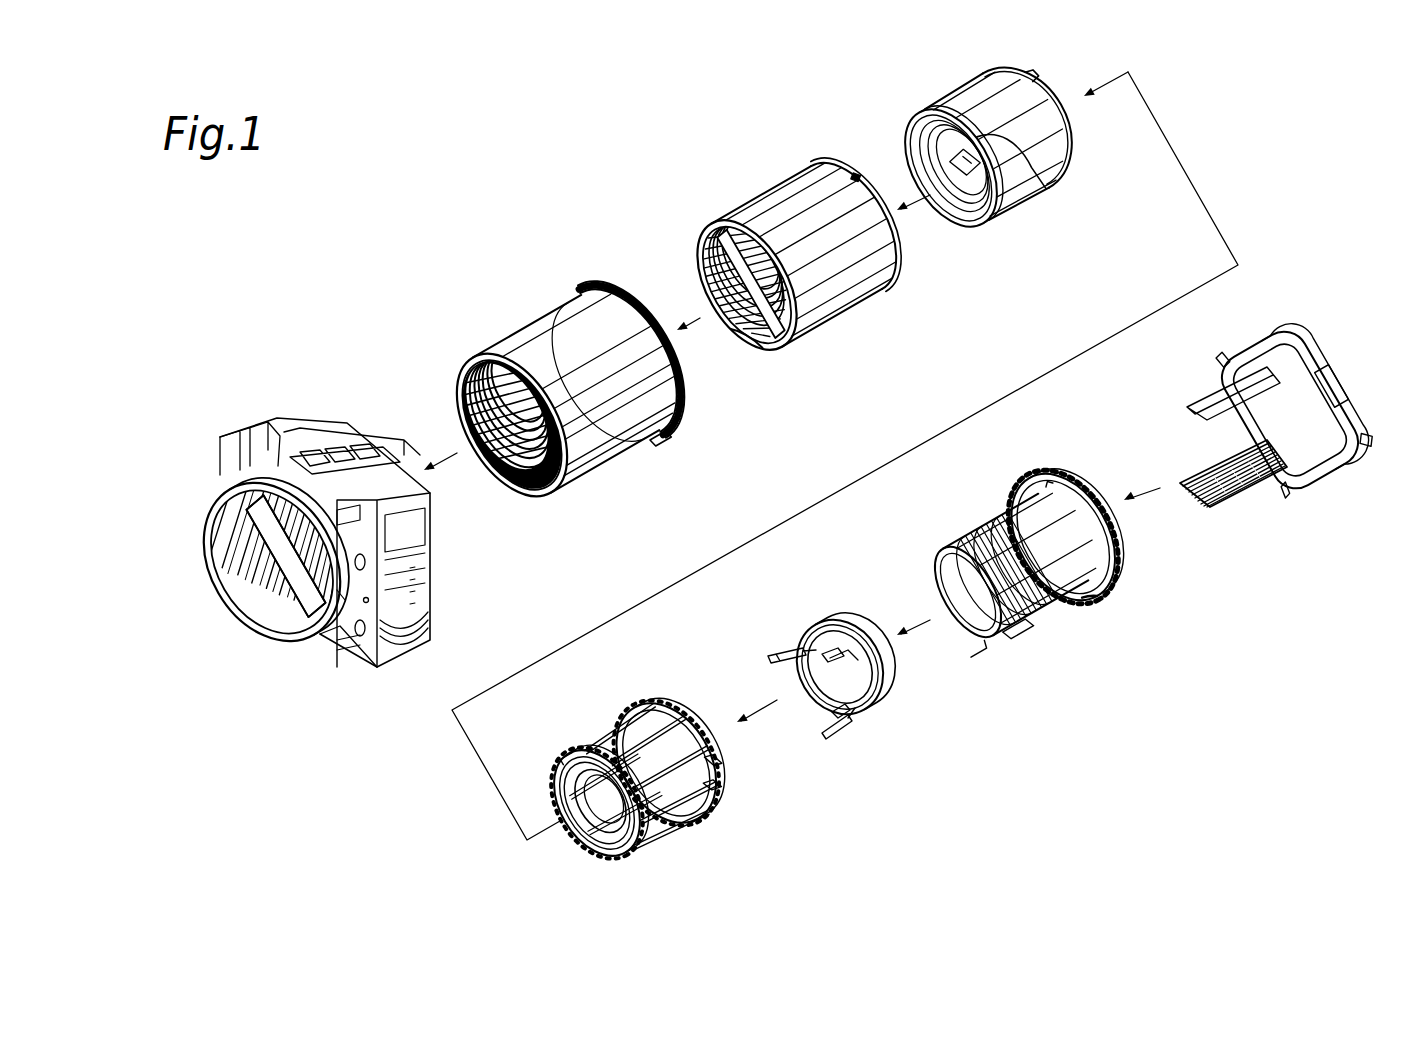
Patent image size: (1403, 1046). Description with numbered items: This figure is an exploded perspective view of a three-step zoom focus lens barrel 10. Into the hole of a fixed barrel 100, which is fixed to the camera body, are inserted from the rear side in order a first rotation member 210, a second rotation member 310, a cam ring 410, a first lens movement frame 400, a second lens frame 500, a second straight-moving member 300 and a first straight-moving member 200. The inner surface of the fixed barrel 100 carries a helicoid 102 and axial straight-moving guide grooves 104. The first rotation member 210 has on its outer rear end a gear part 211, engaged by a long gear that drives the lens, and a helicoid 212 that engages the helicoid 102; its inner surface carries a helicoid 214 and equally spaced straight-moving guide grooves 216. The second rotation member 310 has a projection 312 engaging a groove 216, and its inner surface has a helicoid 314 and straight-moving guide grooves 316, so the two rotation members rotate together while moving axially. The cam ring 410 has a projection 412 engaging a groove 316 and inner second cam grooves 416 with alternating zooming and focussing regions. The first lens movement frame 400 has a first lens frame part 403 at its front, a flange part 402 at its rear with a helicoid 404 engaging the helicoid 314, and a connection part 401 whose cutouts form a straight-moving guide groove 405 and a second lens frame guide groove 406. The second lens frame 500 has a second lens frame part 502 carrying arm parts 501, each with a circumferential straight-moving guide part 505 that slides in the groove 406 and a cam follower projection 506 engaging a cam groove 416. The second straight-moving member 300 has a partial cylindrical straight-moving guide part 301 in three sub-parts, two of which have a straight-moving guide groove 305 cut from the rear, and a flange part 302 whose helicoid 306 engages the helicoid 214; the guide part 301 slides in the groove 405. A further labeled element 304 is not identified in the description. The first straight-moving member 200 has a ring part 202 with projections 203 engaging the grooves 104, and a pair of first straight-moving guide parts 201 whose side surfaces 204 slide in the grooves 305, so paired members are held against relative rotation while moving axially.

The lens barrel 10 is at (384, 205).
The fixed barrel 100 is at (294, 554).
The helicoid 102 is at (282, 626).
The straight-moving guide grooves 104 is at (333, 642).
The first straight-moving member 200 is at (1255, 386).
The first straight-moving guide parts 201 is at (1200, 462).
The ring part 202 is at (1318, 481).
The projections 203 is at (1258, 341).
The side surface 204 is at (1240, 491).
The first rotation member 210 is at (537, 404).
The gear part 211 is at (594, 284).
The helicoid 212 is at (672, 434).
The helicoid 214 is at (488, 472).
The straight-moving guide grooves 216 is at (458, 394).
The second straight-moving member 300 is at (1061, 590).
The straight-moving guide part 301 is at (1073, 618).
The flange part 302 is at (1094, 603).
The guide projection 304 is at (1010, 626).
The straight-moving guide groove 305 is at (975, 621).
The helicoid 306 is at (1118, 553).
The second rotation member 310 is at (773, 260).
The projection 312 is at (851, 180).
The helicoid 314 is at (697, 275).
The straight-moving guide grooves 316 is at (753, 344).
The first lens movement frame 400 is at (665, 801).
The connection part 401 is at (680, 840).
The flange part 402 is at (706, 823).
The first lens frame part 403 is at (596, 851).
The helicoid 404 is at (676, 713).
The straight-moving guide groove 405 is at (711, 784).
The second lens frame guide groove 406 is at (713, 760).
The cam ring 410 is at (1018, 156).
The projection 412 is at (1073, 98).
The second cam grooves 416 is at (1022, 177).
The second lens frame 500 is at (821, 660).
The arm parts 501 is at (841, 722).
The second lens frame part 502 is at (825, 631).
The straight-moving guide part 505 is at (772, 655).
The cam follower projection 506 is at (861, 725).